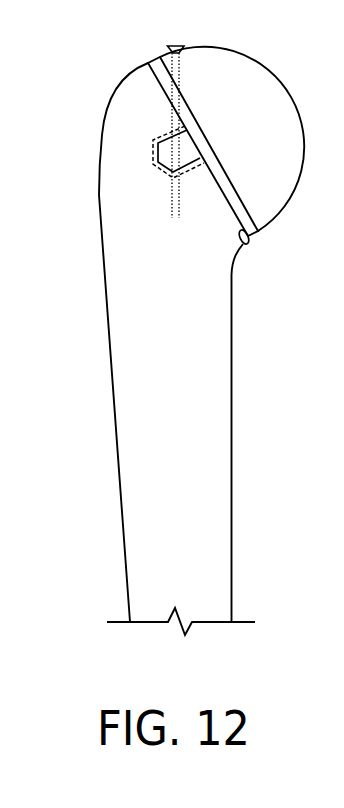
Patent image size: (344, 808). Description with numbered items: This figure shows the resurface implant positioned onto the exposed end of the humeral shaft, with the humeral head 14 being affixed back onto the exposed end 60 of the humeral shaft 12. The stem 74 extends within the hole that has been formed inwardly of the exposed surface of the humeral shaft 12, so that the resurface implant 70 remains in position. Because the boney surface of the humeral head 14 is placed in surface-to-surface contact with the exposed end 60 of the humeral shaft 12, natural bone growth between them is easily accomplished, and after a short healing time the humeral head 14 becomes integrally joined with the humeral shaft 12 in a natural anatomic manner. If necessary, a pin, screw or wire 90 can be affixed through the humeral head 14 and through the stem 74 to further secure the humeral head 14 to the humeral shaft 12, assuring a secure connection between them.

The humeral shaft 12 is at (108, 185).
The humeral head 14 is at (247, 243).
The exposed end 60 is at (153, 80).
The resurface implant 70 is at (265, 98).
The stem 74 is at (190, 154).
The pin, screw or wire 90 is at (182, 68).